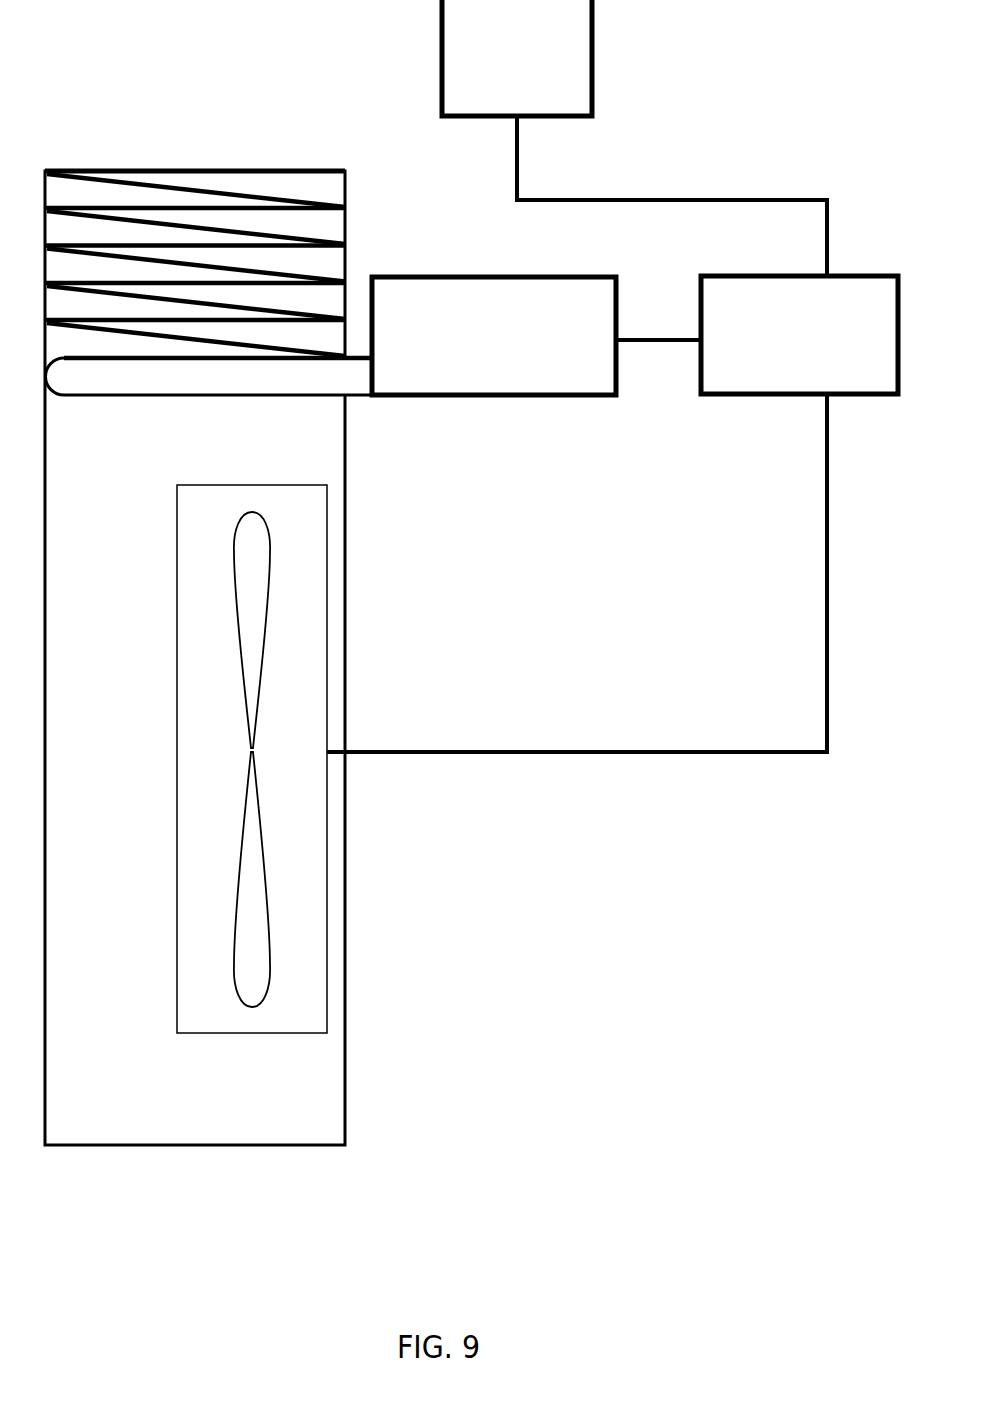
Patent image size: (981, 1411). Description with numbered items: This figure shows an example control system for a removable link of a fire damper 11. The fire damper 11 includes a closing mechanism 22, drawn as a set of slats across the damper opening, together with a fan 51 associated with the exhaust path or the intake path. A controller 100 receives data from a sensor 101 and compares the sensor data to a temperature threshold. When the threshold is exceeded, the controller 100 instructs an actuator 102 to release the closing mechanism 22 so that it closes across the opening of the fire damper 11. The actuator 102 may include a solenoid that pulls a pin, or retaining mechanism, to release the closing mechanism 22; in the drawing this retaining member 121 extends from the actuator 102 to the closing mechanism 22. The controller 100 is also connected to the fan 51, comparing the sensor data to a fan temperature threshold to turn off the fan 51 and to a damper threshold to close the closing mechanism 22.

The fire damper 11 is at (143, 168).
The closing mechanism 22 is at (90, 207).
The shaft 121 is at (208, 389).
The fan 51 is at (250, 747).
The sensor 101 is at (536, 77).
The actuator 102 is at (600, 349).
The controller 100 is at (827, 369).